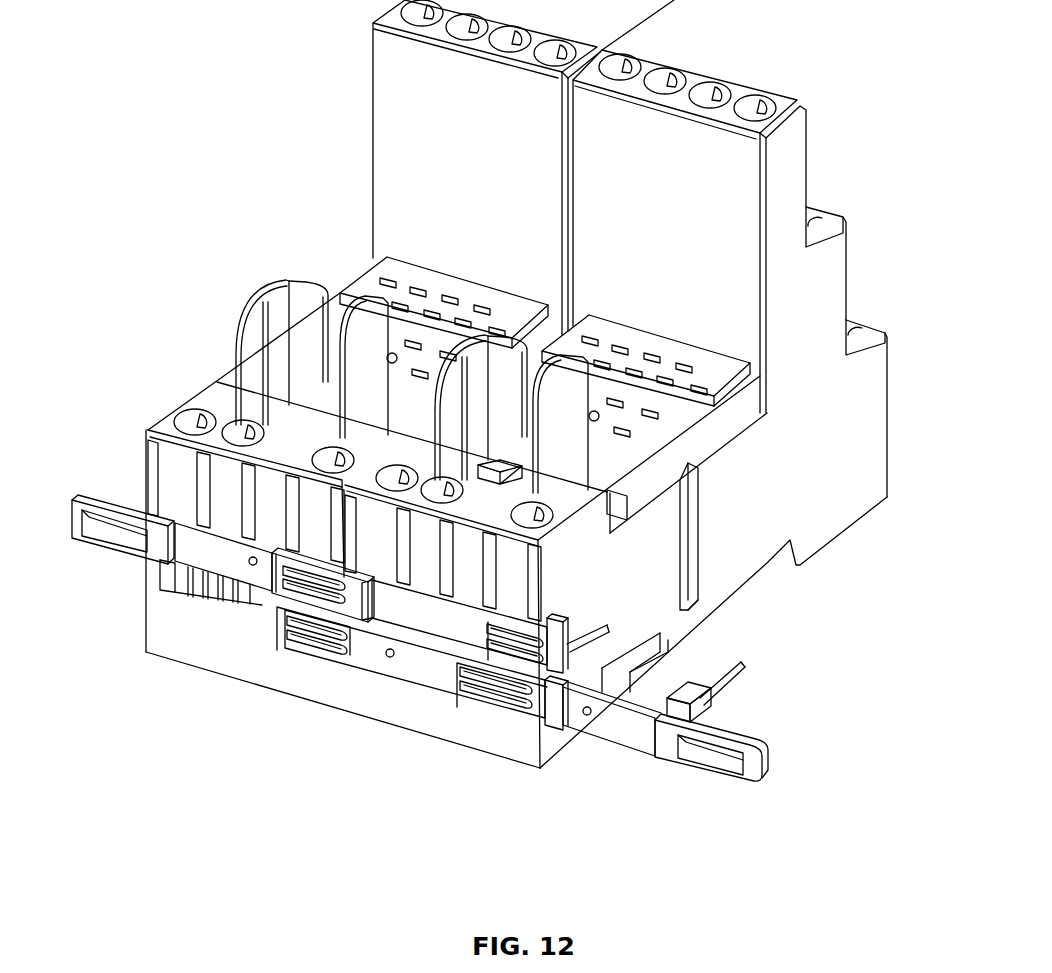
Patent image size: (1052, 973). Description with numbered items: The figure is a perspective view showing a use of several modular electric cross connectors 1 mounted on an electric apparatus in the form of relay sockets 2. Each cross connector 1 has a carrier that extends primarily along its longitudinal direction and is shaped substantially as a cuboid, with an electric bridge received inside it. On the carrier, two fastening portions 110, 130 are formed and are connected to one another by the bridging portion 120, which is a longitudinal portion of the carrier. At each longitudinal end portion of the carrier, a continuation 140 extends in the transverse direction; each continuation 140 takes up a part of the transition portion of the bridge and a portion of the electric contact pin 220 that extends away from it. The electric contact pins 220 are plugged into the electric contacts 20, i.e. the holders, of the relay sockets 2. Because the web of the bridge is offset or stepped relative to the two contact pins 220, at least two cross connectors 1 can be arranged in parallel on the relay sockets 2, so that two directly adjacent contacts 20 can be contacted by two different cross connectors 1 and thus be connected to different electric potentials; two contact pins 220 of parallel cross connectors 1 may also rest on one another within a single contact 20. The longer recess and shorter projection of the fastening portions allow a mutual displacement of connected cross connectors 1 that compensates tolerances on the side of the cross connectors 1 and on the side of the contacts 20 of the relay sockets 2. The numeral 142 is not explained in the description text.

The modular electric cross connector 1 is at (436, 642).
The relay socket 2 is at (302, 180).
The electric contact 20 is at (193, 592).
The fastening portion 110 is at (560, 613).
The bridging portion 120 is at (197, 540).
The fastening portion 130 is at (95, 498).
The continuation 140 is at (157, 570).
The end block 142 is at (637, 688).
The electric contact pin 220 is at (678, 631).